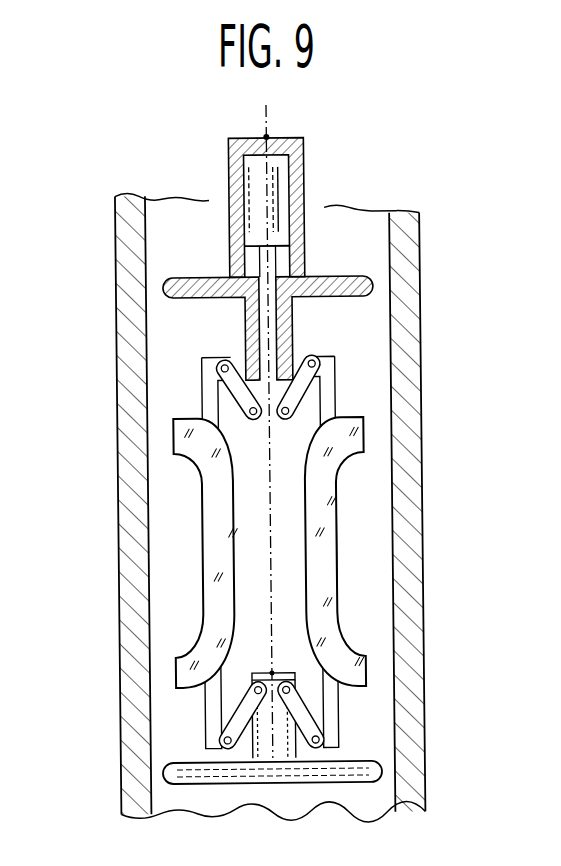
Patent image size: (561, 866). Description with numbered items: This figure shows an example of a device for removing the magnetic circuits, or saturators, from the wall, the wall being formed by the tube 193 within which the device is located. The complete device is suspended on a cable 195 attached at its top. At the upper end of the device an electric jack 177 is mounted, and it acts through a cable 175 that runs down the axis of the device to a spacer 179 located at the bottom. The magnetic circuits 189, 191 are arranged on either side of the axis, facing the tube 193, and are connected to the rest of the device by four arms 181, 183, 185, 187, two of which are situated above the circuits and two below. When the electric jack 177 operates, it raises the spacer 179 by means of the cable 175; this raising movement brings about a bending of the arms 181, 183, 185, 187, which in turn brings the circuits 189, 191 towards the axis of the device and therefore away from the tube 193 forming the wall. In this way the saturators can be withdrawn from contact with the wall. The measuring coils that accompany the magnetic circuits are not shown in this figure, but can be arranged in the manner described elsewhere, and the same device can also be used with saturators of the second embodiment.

The cable 175 is at (267, 563).
The electric jack 177 is at (260, 180).
The spacer 179 is at (170, 765).
The arm 181 is at (234, 388).
The arm 183 is at (292, 387).
The arm 185 is at (234, 718).
The arm 187 is at (296, 709).
The magnetic circuit 189 is at (195, 532).
The magnetic circuit 191 is at (334, 538).
The tube 193 is at (404, 719).
The cable 195 is at (268, 122).